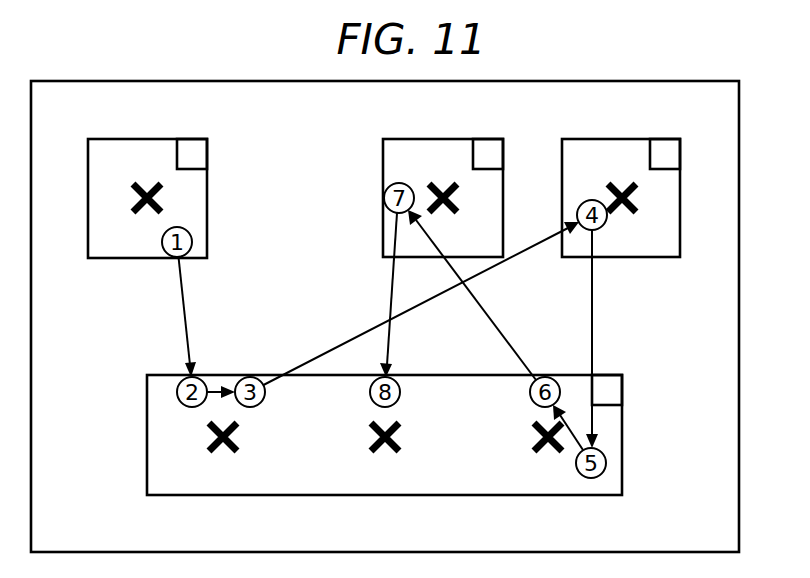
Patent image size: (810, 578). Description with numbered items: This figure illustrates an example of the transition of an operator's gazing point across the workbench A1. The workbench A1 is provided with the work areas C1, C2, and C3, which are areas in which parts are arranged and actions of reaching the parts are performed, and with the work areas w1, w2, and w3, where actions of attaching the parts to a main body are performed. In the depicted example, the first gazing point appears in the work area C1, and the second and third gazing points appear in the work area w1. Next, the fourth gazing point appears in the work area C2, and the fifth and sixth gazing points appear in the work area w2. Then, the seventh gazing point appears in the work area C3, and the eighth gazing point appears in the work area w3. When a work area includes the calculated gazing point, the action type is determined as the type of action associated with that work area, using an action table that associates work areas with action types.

The workbench A1 is at (739, 278).
The work area C1 is at (147, 163).
The work area C2 is at (622, 163).
The work area C3 is at (443, 163).
The work area w1 is at (226, 477).
The work area w2 is at (549, 477).
The work area w3 is at (386, 477).